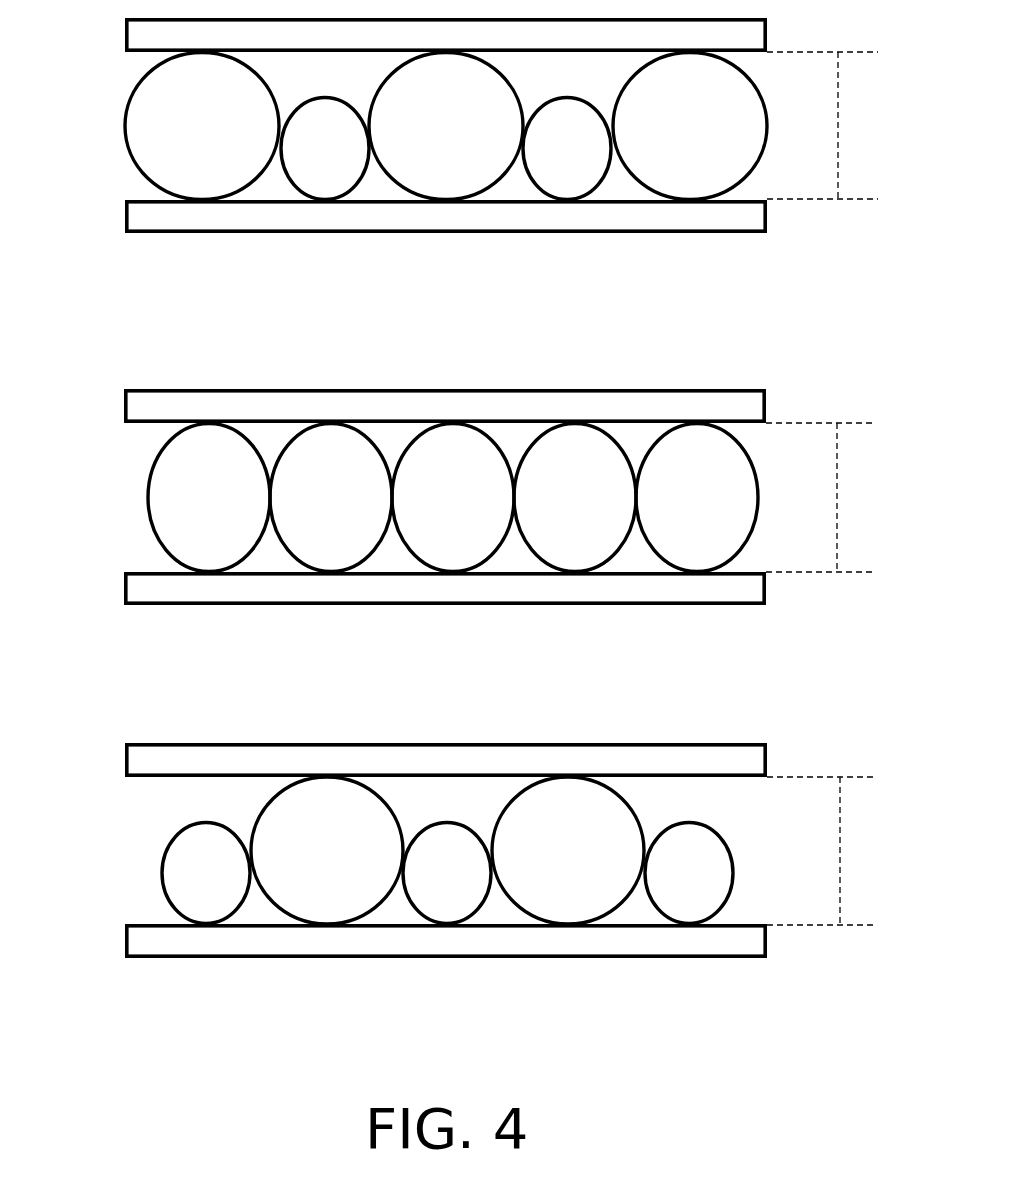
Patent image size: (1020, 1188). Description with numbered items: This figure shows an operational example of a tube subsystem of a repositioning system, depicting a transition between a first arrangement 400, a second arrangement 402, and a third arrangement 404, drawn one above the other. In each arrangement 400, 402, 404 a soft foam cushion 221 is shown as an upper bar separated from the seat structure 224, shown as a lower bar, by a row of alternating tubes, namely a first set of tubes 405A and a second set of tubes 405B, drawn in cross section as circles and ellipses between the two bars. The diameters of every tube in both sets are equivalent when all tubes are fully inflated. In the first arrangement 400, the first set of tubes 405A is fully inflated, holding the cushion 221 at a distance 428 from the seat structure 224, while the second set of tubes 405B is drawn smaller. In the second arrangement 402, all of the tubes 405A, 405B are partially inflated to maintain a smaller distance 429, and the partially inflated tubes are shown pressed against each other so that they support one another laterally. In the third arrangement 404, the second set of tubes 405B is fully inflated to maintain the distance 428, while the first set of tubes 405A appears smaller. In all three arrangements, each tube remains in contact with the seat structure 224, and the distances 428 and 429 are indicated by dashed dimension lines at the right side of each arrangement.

The soft foam cushion 221 is at (125, 27).
The seat structure 224 is at (125, 213).
The first set of tubes 405A is at (446, 488).
The second set of tubes 405B is at (447, 511).
The distance 428 is at (827, 488).
The distance 429 is at (826, 497).
The first arrangement 400 is at (531, 282).
The second arrangement 402 is at (529, 647).
The third arrangement 404 is at (584, 992).